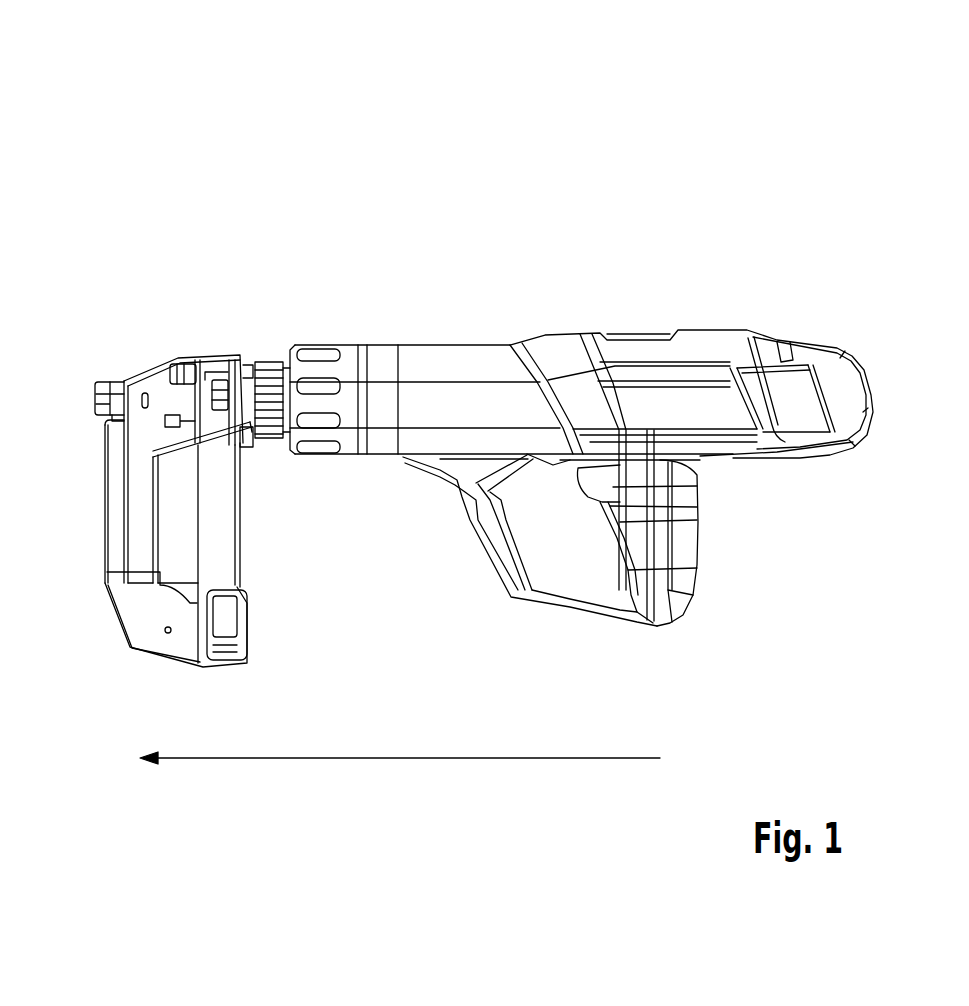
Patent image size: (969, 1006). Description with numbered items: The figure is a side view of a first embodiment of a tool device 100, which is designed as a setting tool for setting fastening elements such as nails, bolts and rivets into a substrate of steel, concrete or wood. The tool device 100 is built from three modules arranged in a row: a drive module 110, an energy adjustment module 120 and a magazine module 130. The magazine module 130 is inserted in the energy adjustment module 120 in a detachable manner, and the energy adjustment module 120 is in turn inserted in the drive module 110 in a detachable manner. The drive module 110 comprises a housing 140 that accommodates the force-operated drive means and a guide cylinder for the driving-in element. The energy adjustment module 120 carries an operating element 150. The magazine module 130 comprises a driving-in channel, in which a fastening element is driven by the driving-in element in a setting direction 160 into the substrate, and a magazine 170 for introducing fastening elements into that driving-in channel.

The tool device 100 is at (163, 92).
The drive module 110 is at (870, 286).
The energy adjustment module 120 is at (397, 286).
The magazine module 130 is at (251, 286).
The housing 140 is at (692, 408).
The operating element 150 is at (373, 417).
The setting direction 160 is at (349, 758).
The magazine 170 is at (145, 514).